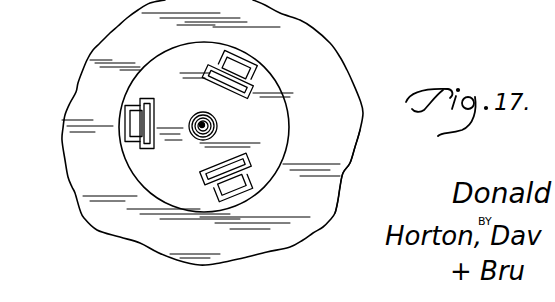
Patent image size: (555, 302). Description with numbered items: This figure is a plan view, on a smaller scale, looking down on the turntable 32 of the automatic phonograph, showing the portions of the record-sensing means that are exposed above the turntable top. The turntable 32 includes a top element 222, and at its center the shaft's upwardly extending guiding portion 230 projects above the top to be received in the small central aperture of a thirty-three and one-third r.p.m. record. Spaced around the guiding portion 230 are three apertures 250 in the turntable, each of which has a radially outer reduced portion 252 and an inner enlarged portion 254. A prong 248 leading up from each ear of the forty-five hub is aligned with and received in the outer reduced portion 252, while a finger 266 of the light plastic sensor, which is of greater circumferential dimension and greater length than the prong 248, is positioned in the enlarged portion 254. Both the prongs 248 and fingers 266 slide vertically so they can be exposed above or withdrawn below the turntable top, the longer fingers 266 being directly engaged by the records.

The top element 222 is at (86, 80).
The prong 248 is at (99, 116).
The finger 266 is at (161, 111).
The guiding portion 230 is at (197, 136).
The radially outer reduced portion 252 is at (248, 63).
The aperture 250 is at (261, 77).
The inner enlarged portion 254 is at (238, 93).
The turntable 32 is at (360, 167).